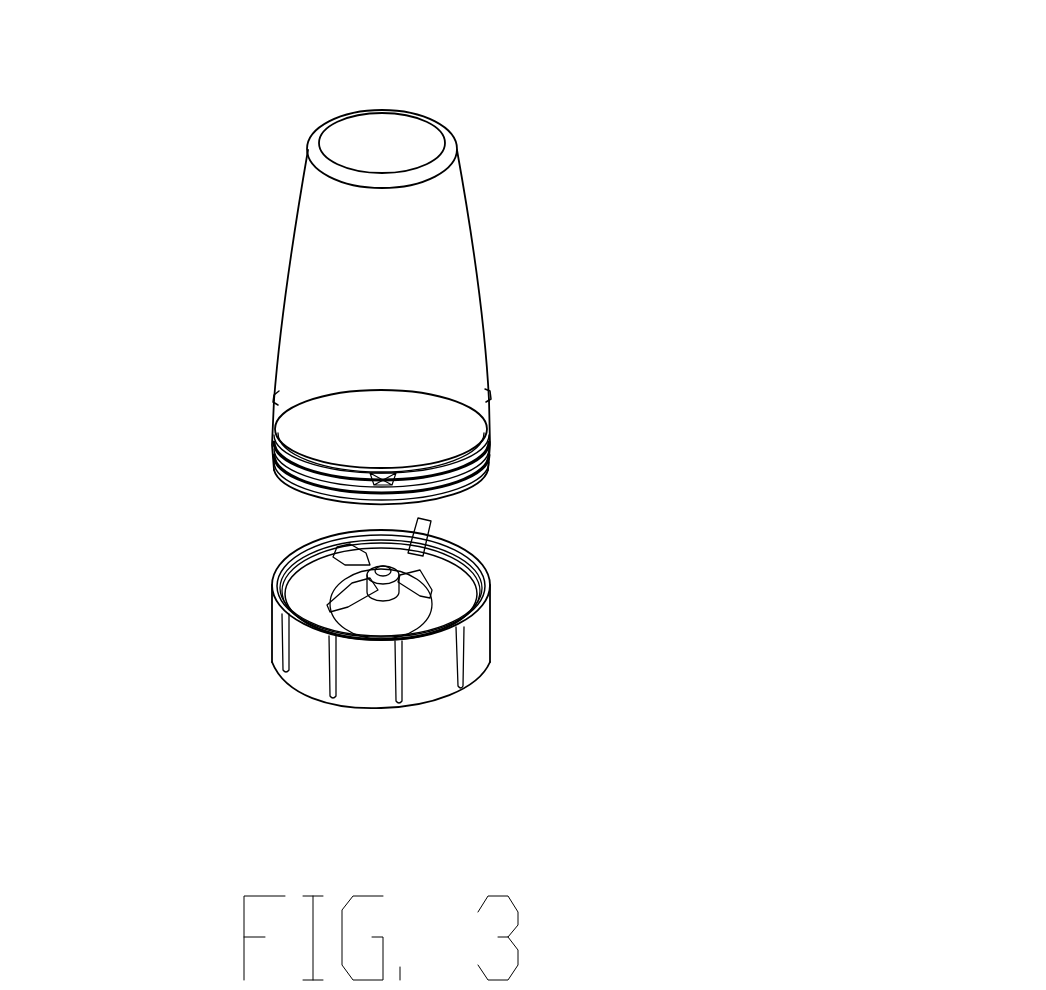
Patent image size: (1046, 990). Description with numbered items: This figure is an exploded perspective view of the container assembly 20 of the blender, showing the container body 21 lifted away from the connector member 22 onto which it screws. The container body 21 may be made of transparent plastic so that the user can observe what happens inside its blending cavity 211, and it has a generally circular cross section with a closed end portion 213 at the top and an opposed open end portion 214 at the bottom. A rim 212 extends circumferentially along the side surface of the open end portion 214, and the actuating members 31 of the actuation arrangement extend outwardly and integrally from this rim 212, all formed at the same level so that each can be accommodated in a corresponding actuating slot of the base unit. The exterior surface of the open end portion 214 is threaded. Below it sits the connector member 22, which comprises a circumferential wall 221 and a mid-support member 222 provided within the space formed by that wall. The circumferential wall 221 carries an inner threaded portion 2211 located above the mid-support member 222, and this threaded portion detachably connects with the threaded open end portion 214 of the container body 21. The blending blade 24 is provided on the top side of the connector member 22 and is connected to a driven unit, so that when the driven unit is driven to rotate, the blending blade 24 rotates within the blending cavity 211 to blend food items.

The container assembly 20 is at (550, 358).
The container body 21 is at (432, 228).
The blending cavity 211 is at (445, 307).
The rim 212 is at (488, 421).
The closed end portion 213 is at (410, 128).
The open end portion 214 is at (483, 459).
The actuating members 31 is at (378, 480).
The connector member 22 is at (502, 565).
The circumferential wall 221 is at (473, 658).
The inner threaded portion 2211 is at (298, 572).
The mid-support member 222 is at (312, 594).
The blending blade 24 is at (417, 533).